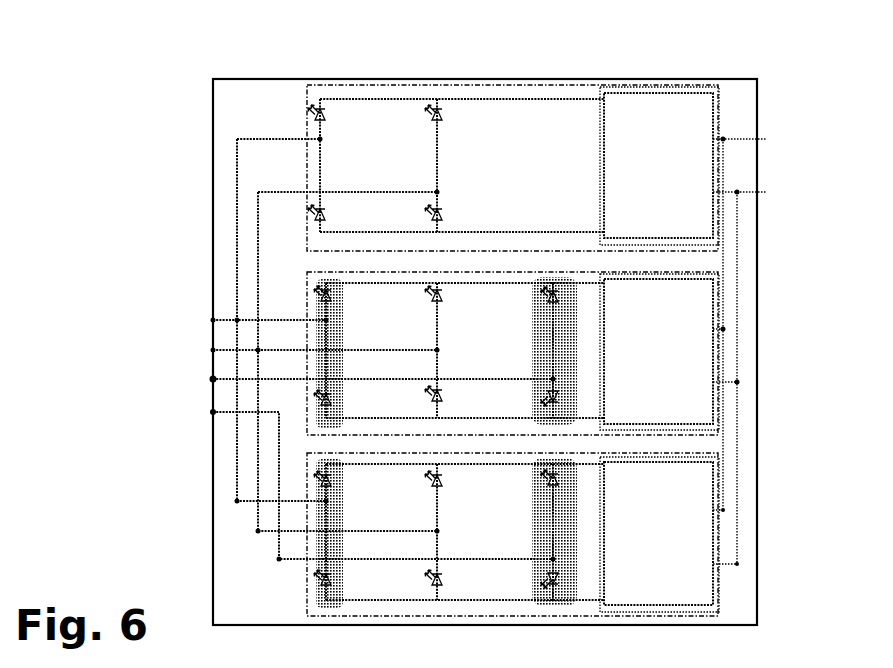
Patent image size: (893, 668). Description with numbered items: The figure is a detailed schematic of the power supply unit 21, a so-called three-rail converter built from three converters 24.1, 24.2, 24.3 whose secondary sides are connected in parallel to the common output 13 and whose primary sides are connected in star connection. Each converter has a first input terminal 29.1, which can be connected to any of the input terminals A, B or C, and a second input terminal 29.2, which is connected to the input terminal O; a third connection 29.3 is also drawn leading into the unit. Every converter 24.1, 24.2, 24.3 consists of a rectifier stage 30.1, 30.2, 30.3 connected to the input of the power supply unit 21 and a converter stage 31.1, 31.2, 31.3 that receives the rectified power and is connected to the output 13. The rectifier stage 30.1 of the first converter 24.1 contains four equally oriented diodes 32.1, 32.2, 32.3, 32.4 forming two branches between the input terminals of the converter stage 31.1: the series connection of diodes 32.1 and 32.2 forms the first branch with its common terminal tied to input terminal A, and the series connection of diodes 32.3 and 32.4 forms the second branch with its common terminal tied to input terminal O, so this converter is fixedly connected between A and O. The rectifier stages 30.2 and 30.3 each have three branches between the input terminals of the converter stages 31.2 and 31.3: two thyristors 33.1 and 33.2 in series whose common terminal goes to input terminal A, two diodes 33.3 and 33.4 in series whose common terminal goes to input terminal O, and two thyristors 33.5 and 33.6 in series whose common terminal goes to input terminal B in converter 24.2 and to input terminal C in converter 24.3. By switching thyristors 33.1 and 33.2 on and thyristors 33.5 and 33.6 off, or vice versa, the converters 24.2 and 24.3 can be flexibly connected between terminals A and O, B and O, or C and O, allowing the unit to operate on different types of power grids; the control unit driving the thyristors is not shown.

The output 13 is at (755, 352).
The power supply unit 21 is at (737, 78).
The converter 24.1 is at (718, 113).
The converter 24.2 is at (718, 281).
The converter 24.3 is at (718, 463).
The first input terminal 29.1 is at (300, 140).
The second input terminal 29.2 is at (287, 192).
The control line 29.3 is at (268, 375).
The rectifier stage 30.1 is at (542, 84).
The rectifier stage 30.2 is at (484, 275).
The rectifier stage 30.3 is at (479, 604).
The converter stage 31.1 is at (658, 165).
The converter stage 31.2 is at (658, 351).
The converter stage 31.3 is at (658, 533).
The diode 32.1 is at (325, 119).
The diode 32.2 is at (325, 214).
The diode 32.3 is at (441, 119).
The diode 32.4 is at (441, 214).
The thyristor 33.1 is at (330, 299).
The thyristor 33.2 is at (330, 404).
The diode 33.3 is at (445, 300).
The diode 33.4 is at (445, 398).
The thyristor 33.5 is at (563, 287).
The thyristor 33.6 is at (560, 390).